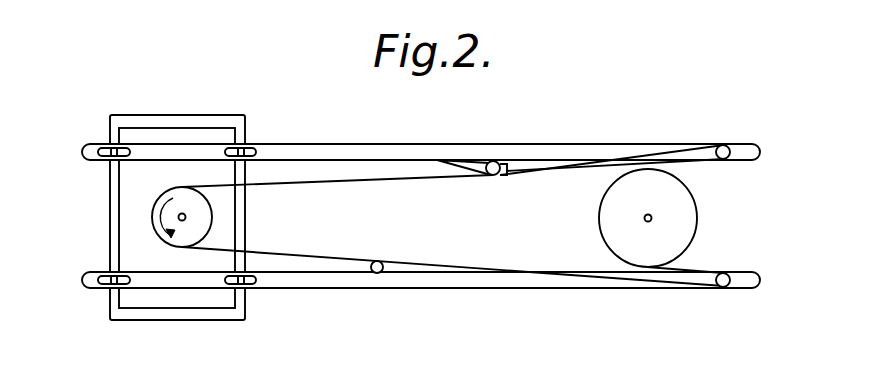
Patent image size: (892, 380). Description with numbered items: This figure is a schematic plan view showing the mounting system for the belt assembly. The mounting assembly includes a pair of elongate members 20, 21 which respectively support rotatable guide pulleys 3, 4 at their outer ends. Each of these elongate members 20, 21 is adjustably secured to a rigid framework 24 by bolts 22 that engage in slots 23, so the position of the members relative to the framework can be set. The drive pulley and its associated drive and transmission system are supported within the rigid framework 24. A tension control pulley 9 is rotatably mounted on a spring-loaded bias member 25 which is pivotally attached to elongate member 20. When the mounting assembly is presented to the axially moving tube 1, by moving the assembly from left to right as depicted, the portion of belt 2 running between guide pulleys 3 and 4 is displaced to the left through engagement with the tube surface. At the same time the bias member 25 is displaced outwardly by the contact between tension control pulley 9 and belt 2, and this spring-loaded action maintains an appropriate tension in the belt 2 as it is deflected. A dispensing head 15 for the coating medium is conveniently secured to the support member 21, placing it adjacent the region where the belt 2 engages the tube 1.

The axially moving tube 1 is at (682, 225).
The belt 2 is at (330, 178).
The guide pulley 3 is at (727, 147).
The guide pulley 4 is at (728, 287).
The tension control pulley 9 is at (497, 160).
The dispensing head 15 is at (386, 272).
The elongate member 20 is at (598, 153).
The elongate member 21 is at (613, 288).
The bolt 22 is at (232, 146).
The slot 23 is at (255, 147).
The rigid framework 24 is at (207, 312).
The spring-loaded bias member 25 is at (478, 158).